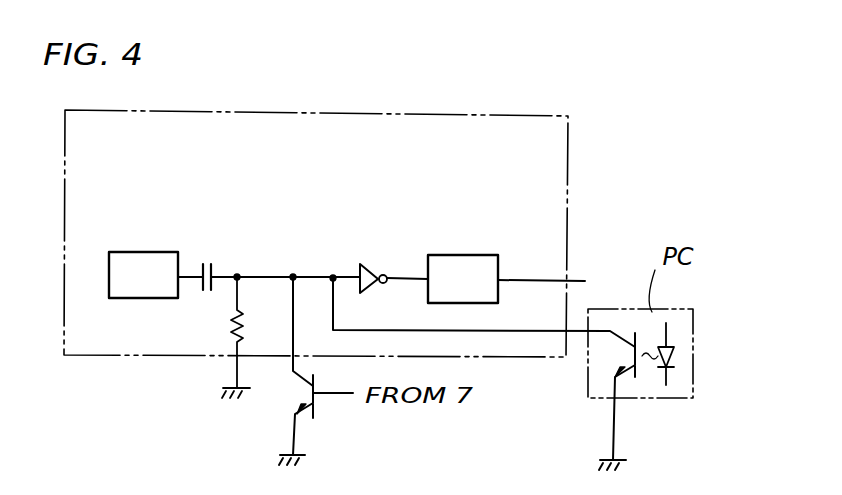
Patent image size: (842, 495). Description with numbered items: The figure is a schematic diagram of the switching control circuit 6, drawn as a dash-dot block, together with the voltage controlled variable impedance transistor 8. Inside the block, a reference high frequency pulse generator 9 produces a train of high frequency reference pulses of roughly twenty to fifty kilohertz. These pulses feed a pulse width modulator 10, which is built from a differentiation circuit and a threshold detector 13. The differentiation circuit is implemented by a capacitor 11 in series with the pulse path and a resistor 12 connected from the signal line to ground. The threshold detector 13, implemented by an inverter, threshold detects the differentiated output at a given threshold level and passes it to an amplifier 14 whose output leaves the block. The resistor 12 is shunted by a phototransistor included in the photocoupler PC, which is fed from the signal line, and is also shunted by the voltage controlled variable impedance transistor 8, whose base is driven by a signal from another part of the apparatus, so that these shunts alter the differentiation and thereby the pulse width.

The switching control circuit 6 is at (527, 118).
The voltage controlled variable impedance transistor 8 is at (305, 393).
The reference high frequency pulse generator 9 is at (150, 252).
The pulse width modulator 10 is at (358, 183).
The capacitor 11 is at (212, 262).
The resistor 12 is at (247, 320).
The threshold detector 13 is at (368, 262).
The amplifier 14 is at (470, 254).